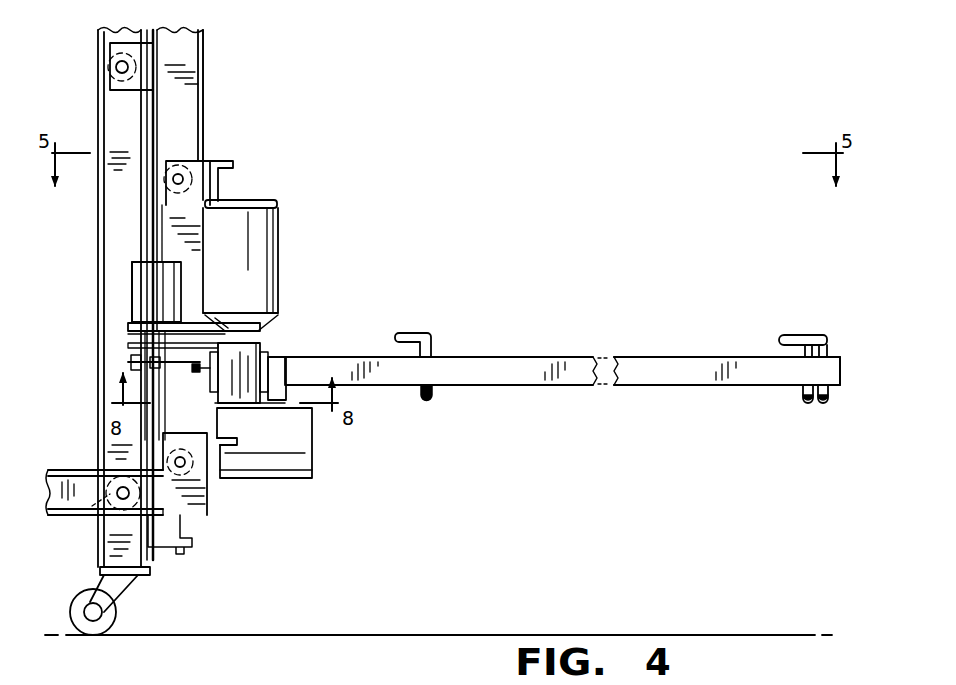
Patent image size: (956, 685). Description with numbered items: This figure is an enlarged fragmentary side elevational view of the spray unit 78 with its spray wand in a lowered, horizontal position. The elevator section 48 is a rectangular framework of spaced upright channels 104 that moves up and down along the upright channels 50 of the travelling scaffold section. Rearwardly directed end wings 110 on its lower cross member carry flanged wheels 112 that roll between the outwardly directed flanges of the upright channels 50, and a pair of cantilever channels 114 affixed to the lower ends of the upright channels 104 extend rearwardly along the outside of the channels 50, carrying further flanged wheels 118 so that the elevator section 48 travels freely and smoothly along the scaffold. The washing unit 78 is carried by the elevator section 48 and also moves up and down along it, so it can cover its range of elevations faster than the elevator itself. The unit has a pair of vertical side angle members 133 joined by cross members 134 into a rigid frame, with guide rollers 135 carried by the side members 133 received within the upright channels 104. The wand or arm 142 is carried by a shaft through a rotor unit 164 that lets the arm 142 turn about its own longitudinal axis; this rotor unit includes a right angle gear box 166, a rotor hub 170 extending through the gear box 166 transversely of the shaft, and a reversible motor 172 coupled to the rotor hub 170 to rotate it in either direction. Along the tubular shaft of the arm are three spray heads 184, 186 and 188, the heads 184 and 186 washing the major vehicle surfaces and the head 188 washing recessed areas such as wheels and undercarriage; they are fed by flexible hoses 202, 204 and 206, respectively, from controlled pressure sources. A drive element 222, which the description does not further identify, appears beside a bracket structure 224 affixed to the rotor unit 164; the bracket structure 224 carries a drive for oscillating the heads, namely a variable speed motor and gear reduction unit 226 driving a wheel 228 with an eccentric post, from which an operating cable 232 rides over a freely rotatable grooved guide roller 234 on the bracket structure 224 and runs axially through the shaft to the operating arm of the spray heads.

The elevator section 48 is at (206, 72).
The upright channels 50 is at (120, 112).
The spray unit 78 is at (320, 337).
The upright channels 104 is at (193, 43).
The end wings 110 is at (112, 66).
The flanged wheels 112 is at (108, 59).
The cantilever channels 114 is at (62, 486).
The flanged wheels 118 is at (82, 514).
The vertical side angle members 133 is at (205, 162).
The cross members 134 is at (222, 173).
The guide rollers 135 is at (190, 163).
The spray arm 142 is at (637, 354).
The rotor unit 164 is at (285, 270).
The right angle gear box 166 is at (249, 350).
The rotor hub 170 is at (266, 349).
The reversible motor 172 is at (272, 207).
The spray head 184 is at (446, 344).
The spray head 186 is at (794, 393).
The spray head 188 is at (839, 344).
The flexible hose 202 is at (414, 334).
The flexible hose 204 is at (808, 333).
The flexible hose 206 is at (824, 338).
The carriage housing 222 is at (130, 307).
The bracket structure 224 is at (128, 338).
The motor and gear reduction unit 226 is at (140, 277).
The wheel 228 is at (130, 362).
The operating cable 232 is at (178, 378).
The guide roller 234 is at (205, 382).